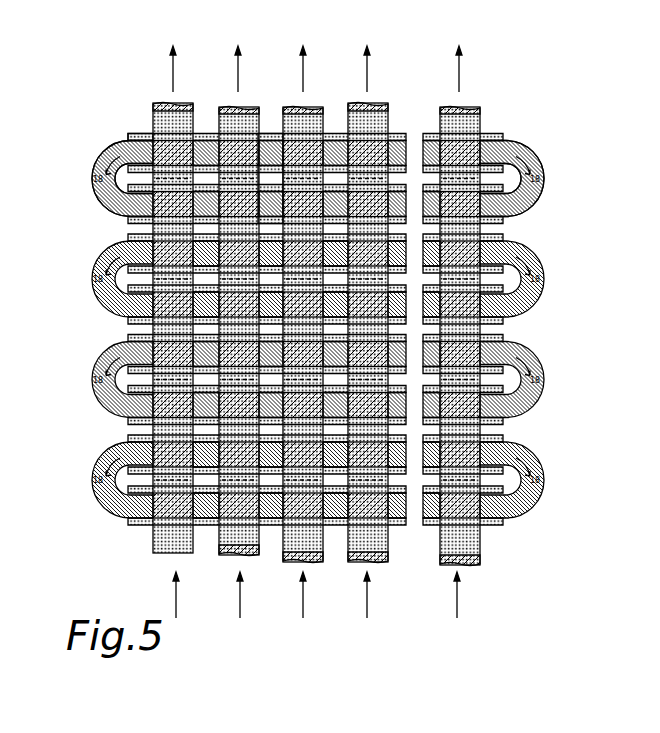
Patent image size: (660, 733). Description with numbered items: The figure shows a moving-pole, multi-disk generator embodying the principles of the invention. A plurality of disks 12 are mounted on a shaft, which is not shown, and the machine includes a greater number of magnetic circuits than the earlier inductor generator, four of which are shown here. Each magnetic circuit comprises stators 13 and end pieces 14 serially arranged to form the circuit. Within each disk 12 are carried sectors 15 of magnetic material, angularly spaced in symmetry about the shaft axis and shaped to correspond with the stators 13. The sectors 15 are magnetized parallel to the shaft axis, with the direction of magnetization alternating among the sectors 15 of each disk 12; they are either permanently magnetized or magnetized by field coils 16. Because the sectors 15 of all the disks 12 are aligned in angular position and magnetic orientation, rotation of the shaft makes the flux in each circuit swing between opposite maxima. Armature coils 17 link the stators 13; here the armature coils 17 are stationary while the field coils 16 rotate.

The disk 12 is at (466, 106).
The stator 13 is at (268, 134).
The end piece 14 is at (95, 178).
The sector 15 is at (219, 132).
The field coil 16 is at (154, 131).
The armature coil 17 is at (128, 134).